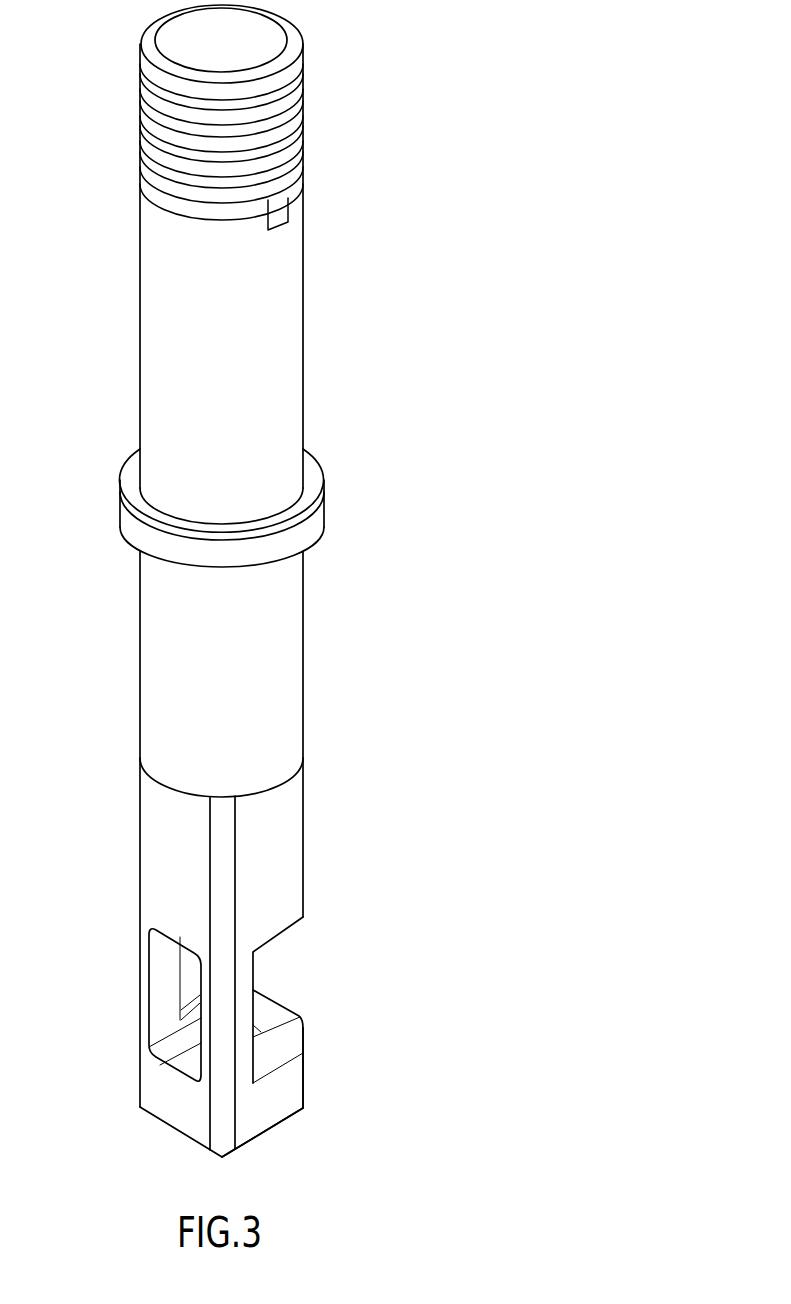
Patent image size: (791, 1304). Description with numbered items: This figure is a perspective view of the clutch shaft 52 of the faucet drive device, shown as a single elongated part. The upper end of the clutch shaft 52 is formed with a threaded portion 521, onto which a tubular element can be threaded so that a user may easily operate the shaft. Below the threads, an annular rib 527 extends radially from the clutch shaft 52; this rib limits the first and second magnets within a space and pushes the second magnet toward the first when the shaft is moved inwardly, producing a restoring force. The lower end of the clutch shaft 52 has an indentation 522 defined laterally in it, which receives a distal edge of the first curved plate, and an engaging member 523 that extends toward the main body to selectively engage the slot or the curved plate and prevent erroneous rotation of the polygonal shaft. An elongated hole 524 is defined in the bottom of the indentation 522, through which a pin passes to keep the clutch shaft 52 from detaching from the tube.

The clutch shaft 52 is at (326, 645).
The threaded portion 521 is at (303, 108).
The annular rib 527 is at (323, 505).
The indentation 522 is at (300, 943).
The engaging member 523 is at (297, 1092).
The elongated hole 524 is at (188, 992).